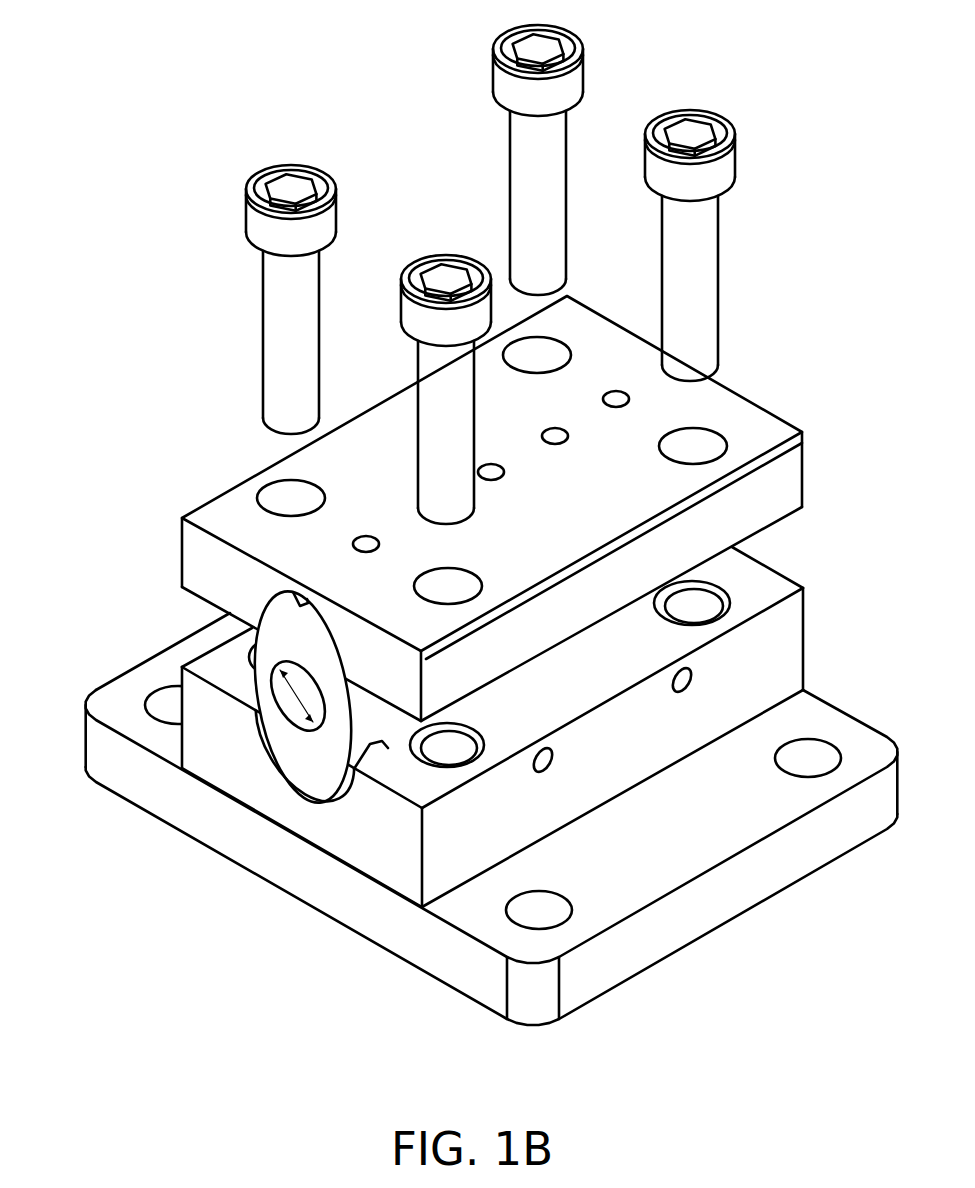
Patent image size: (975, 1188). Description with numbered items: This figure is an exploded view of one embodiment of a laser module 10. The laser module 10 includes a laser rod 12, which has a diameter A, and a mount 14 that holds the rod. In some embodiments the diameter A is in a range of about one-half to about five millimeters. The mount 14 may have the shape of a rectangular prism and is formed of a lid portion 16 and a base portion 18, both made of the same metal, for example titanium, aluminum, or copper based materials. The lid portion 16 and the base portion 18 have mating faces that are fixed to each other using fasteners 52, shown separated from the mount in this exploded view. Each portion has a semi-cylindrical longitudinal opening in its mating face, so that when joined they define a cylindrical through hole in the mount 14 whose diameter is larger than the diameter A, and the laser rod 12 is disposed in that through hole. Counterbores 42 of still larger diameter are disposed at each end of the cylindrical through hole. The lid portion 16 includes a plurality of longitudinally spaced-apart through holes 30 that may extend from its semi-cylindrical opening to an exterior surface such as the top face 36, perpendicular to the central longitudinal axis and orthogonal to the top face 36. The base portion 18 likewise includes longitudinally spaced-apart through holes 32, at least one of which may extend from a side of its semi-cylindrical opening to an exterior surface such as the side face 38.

The laser module 10 is at (82, 40).
The laser rod 12 is at (341, 690).
The mount 14 is at (812, 554).
The lid portion 16 is at (748, 422).
The base portion 18 is at (885, 815).
The through holes 30 is at (504, 480).
The through holes 32 is at (676, 690).
The top face 36 is at (233, 502).
The side face 38 is at (783, 657).
The counterbores 42 is at (292, 768).
The fasteners 52 is at (262, 332).
The diameter A is at (287, 702).